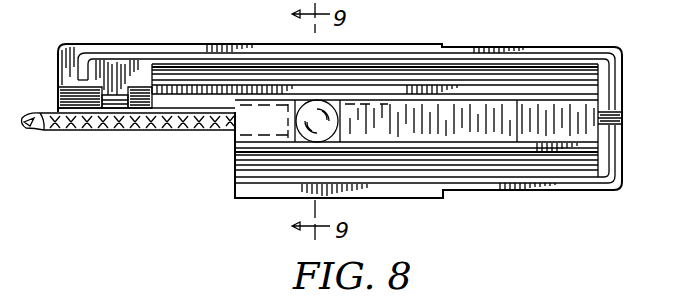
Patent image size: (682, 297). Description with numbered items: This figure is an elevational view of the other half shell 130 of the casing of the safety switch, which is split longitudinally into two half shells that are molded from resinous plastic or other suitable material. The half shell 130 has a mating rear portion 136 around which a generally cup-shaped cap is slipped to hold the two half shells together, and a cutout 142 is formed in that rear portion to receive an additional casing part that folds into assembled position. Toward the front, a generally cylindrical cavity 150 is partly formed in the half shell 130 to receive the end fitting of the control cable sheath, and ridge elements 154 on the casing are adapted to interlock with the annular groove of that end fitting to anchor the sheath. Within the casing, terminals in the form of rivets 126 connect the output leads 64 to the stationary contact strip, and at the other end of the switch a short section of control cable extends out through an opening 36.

The opening 36 is at (622, 118).
The output leads 64 is at (104, 124).
The rivets 126 is at (325, 110).
The half shell 130 is at (510, 44).
The rear portion 136 is at (80, 47).
The cutout 142 is at (197, 98).
The cavity 150 is at (77, 104).
The ridge elements 154 is at (118, 96).